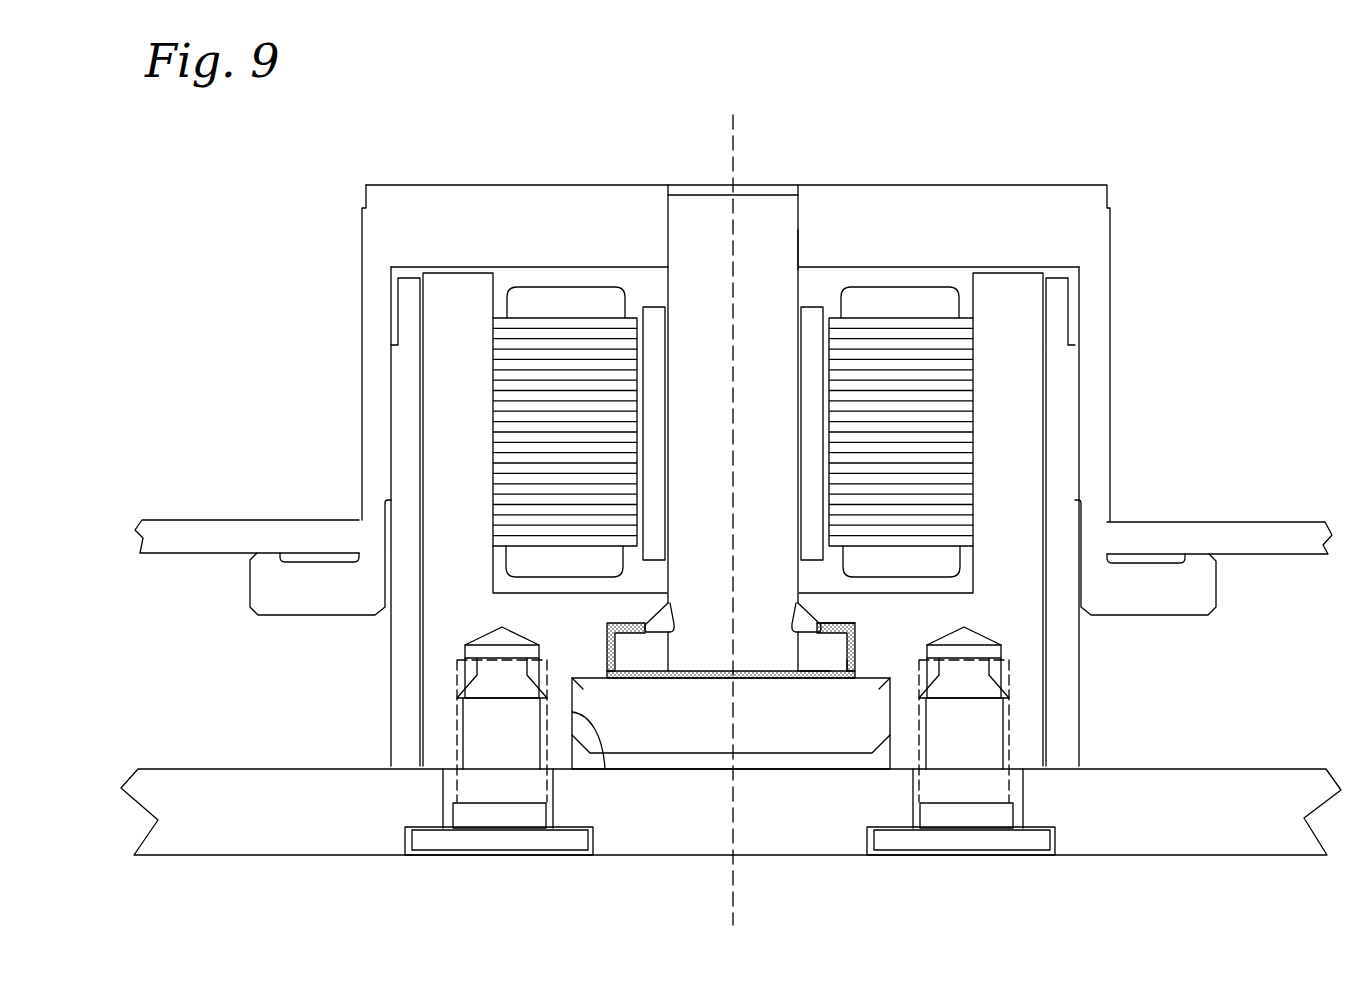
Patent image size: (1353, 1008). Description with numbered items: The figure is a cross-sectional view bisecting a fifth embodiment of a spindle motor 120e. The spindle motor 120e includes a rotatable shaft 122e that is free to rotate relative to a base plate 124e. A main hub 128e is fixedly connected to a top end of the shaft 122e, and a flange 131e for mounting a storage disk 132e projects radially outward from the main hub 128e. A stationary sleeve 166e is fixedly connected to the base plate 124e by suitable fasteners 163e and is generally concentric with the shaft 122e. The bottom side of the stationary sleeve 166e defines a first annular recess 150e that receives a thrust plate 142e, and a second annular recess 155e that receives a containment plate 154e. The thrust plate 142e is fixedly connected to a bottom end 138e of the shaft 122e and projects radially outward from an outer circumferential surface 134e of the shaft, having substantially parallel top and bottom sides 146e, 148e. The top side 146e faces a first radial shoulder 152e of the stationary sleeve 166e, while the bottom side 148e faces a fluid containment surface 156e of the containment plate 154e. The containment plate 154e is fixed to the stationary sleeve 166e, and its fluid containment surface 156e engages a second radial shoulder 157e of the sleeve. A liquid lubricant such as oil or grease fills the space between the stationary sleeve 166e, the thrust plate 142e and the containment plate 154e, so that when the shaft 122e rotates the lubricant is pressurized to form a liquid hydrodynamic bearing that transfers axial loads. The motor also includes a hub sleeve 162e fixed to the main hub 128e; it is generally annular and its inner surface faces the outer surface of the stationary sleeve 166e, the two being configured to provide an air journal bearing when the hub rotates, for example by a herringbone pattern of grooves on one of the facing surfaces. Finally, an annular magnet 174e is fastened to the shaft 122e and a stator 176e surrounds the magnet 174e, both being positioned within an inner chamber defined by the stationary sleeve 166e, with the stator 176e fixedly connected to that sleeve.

The spindle motor 120e is at (226, 382).
The rotatable shaft 122e is at (802, 214).
The base plate 124e is at (1070, 856).
The main hub 128e is at (362, 326).
The flange 131e is at (292, 613).
The storage disk 132e is at (210, 520).
The outer circumferential surface 134e is at (800, 253).
The bottom end 138e is at (690, 677).
The thrust plate 142e is at (630, 650).
The top side 146e is at (818, 628).
The bottom side 148e is at (813, 679).
The first annular recess 150e is at (835, 679).
The first radial shoulder 152e is at (849, 636).
The containment plate 154e is at (752, 748).
The second annular recess 155e is at (604, 770).
The fluid containment surface 156e is at (707, 671).
The second radial shoulder 157e is at (593, 679).
The hub sleeve 162e is at (1067, 436).
The fasteners 163e is at (533, 848).
The stationary sleeve 166e is at (1012, 473).
The annular magnet 174e is at (655, 310).
The stator 176e is at (587, 317).